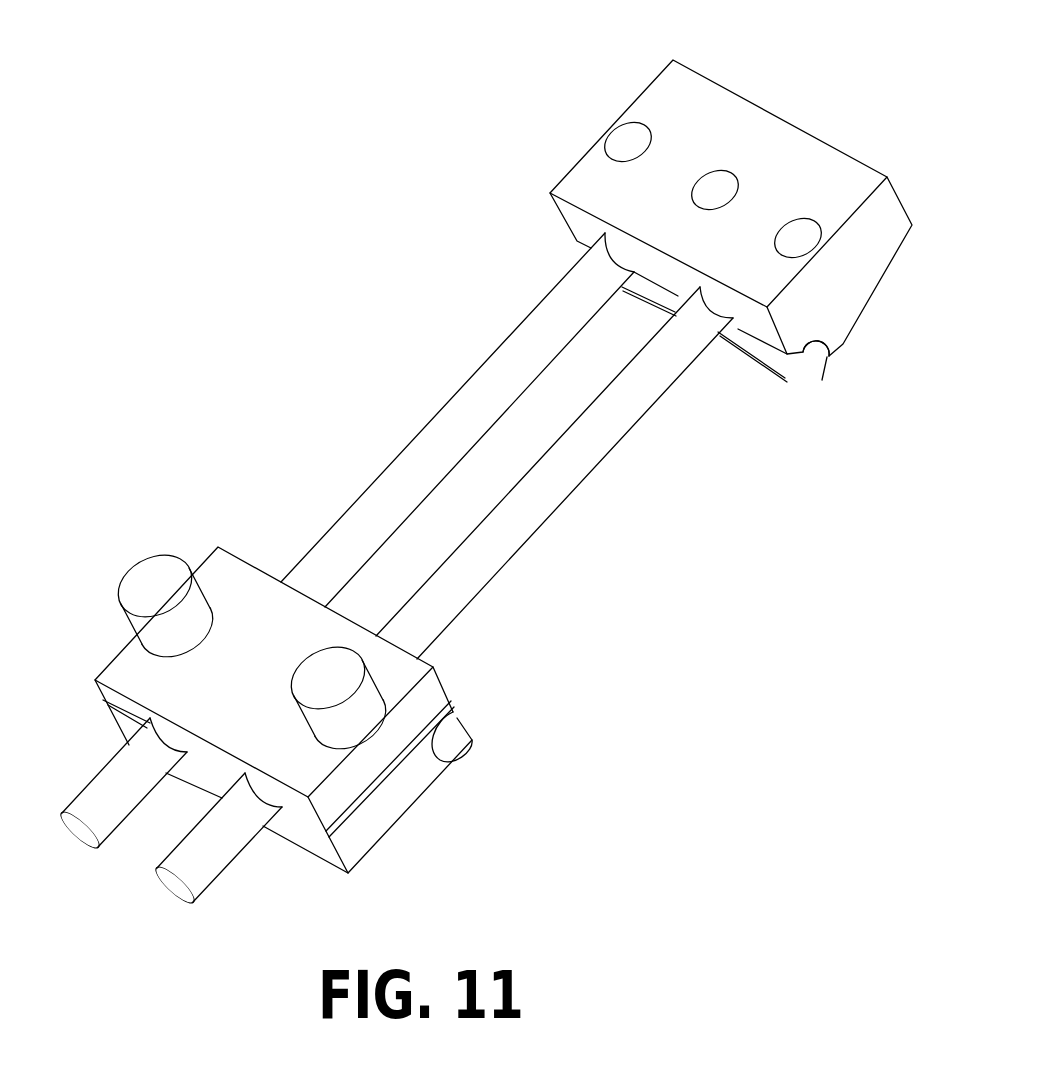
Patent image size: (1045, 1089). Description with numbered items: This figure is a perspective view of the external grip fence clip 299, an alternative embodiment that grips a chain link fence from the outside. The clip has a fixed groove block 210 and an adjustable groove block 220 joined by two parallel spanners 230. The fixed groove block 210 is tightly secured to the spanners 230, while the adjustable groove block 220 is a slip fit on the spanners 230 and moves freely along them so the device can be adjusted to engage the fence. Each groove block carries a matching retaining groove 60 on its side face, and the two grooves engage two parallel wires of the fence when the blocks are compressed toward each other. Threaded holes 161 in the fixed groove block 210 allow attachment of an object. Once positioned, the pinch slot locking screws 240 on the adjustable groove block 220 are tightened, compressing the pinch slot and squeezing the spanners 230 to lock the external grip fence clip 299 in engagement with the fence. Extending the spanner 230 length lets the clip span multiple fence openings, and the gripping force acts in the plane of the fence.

The threaded holes 161 is at (627, 140).
The fixed groove block 210 is at (598, 187).
The adjustable groove block 220 is at (410, 778).
The spanners 230 is at (480, 407).
The pinch slot locking screws 240 is at (153, 597).
The retaining groove 60 is at (803, 367).
The external grip fence clip 299 is at (420, 838).